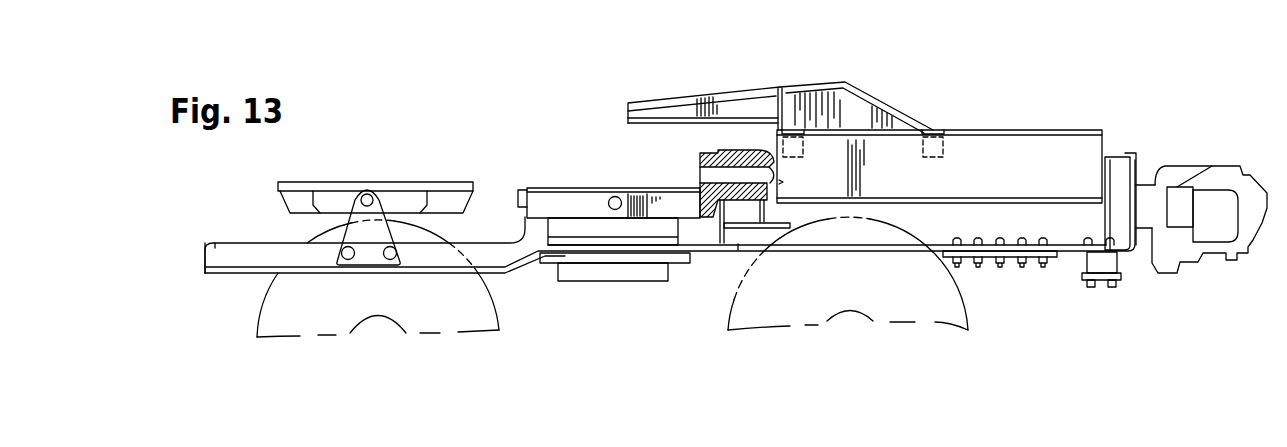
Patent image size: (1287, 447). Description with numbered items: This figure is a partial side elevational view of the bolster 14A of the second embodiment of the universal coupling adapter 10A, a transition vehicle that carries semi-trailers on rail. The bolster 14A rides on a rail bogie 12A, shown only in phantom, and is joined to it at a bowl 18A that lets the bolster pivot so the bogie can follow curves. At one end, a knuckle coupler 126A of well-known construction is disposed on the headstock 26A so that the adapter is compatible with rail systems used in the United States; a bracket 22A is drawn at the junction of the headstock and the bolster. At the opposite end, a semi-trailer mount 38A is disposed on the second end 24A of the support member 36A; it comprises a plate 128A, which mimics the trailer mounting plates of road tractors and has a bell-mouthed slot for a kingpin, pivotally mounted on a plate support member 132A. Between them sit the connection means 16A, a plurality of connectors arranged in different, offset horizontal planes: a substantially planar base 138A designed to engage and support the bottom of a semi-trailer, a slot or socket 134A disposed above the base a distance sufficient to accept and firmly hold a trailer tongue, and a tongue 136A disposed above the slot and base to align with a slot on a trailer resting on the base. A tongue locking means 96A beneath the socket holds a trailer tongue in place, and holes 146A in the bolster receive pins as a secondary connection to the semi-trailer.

The universal coupling adapter 10A is at (616, 100).
The rail bogie 12A is at (273, 280).
The bolster 14A is at (1027, 143).
The connection means 16A is at (762, 87).
The bowl 18A is at (623, 282).
The bracket 22A is at (1117, 156).
The second end 24A is at (257, 243).
The headstock 26A is at (1136, 158).
The support member 36A is at (485, 242).
The semi-trailer mount 38A is at (399, 157).
The tongue locking means 96A is at (738, 230).
The knuckle coupler 126A is at (1225, 160).
The plate 128A is at (350, 182).
The plate support member 132A is at (400, 258).
The slot or socket 134A is at (713, 152).
The tongue 136A is at (732, 93).
The base 138A is at (567, 187).
The holes 146A is at (608, 197).